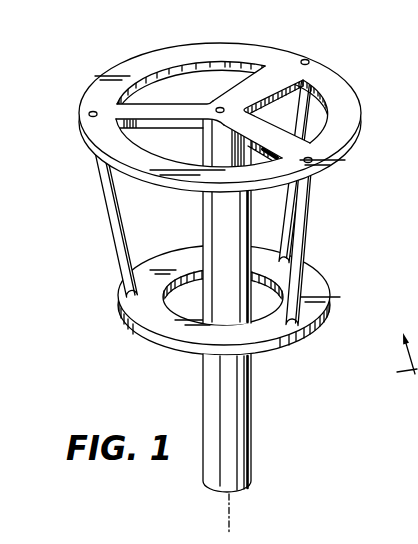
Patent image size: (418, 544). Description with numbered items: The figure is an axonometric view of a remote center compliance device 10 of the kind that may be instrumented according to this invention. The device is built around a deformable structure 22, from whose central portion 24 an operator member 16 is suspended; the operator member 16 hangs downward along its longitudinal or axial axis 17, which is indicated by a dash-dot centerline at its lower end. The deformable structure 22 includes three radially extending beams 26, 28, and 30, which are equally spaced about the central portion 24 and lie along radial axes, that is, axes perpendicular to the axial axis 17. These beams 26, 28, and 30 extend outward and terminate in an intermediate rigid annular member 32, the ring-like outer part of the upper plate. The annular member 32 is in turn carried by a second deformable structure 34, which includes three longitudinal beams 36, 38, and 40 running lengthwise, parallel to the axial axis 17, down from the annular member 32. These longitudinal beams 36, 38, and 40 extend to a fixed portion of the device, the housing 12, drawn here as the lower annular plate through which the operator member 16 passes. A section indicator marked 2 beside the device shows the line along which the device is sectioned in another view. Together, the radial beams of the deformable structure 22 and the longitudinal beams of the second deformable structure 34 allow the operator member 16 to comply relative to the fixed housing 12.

The remote center compliance device 10 is at (79, 43).
The housing 12 is at (161, 316).
The operator member 16 is at (253, 403).
The axial axis 17 is at (229, 499).
The deformable structure 22 is at (244, 137).
The central portion 24 is at (216, 101).
The radially extending beam 26 is at (157, 113).
The radially extending beam 28 is at (272, 66).
The radially extending beam 30 is at (252, 128).
The intermediate rigid annular member 32 is at (344, 90).
The second deformable structure 34 is at (212, 197).
The longitudinal beam 36 is at (103, 181).
The longitudinal beam 38 is at (289, 210).
The longitudinal beam 40 is at (308, 229).
The section line 2 is at (407, 365).